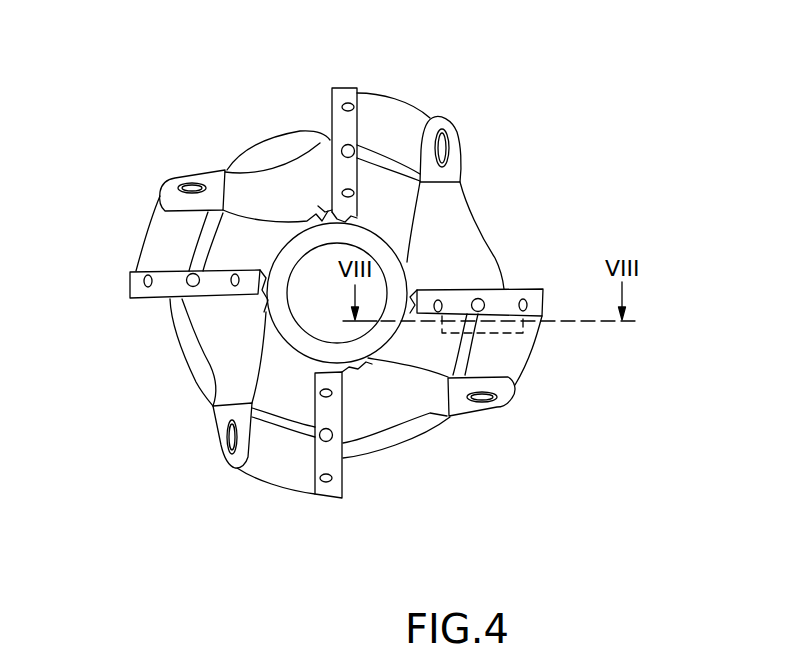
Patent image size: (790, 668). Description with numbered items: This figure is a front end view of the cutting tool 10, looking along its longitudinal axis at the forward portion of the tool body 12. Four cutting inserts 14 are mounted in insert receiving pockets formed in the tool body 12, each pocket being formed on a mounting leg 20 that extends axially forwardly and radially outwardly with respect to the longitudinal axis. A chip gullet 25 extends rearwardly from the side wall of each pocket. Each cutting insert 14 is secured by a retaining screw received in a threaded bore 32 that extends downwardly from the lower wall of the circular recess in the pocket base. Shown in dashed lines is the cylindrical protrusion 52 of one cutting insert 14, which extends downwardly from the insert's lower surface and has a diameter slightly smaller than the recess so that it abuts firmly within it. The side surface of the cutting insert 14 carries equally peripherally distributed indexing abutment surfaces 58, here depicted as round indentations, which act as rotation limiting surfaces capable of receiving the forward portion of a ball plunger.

The cutting tool 10 is at (548, 77).
The tool body 12 is at (215, 344).
The cutting insert 14 is at (350, 481).
The mounting leg 20 is at (285, 473).
The chip gullet 25 is at (276, 177).
The threaded bore 32 is at (484, 399).
The cylindrical protrusion 52 is at (540, 334).
The indexing abutment surfaces 58 is at (140, 270).